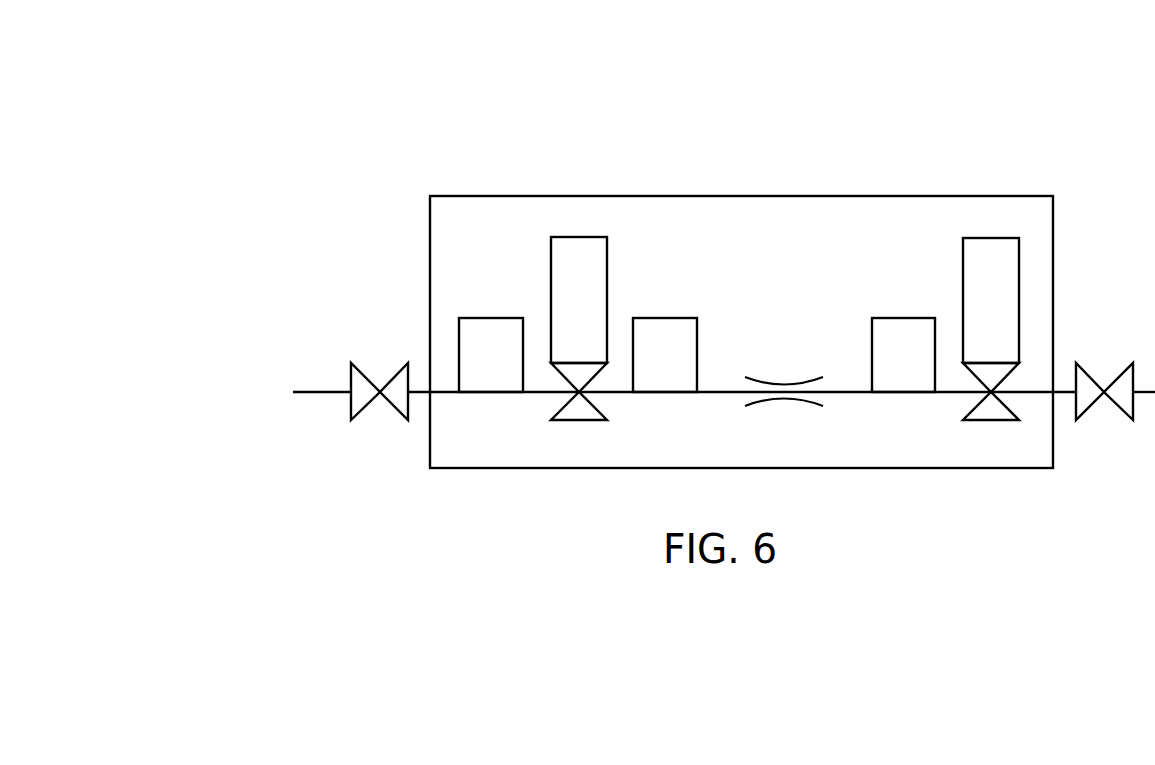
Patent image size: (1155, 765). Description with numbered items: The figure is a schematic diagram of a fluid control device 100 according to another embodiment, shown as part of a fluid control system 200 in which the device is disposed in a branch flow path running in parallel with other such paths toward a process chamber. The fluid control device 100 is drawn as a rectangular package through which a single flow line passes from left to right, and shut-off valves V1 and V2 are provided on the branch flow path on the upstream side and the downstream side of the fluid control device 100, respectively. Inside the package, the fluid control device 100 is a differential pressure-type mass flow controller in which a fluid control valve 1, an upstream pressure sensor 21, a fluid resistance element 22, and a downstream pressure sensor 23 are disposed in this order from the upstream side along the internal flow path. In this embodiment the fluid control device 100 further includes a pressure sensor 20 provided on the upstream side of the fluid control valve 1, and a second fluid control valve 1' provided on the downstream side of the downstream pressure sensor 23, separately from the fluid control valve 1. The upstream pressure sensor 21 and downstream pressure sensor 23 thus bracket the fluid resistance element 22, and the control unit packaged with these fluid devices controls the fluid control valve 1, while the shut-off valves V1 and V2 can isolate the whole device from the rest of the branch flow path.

The fluid control system 200 is at (340, 126).
The fluid control device 100 is at (761, 195).
The fluid control valve 1 is at (579, 281).
The second fluid control valve 1' is at (991, 281).
The pressure sensor 20 is at (490, 316).
The upstream pressure sensor 21 is at (665, 316).
The fluid resistance element 22 is at (785, 384).
The downstream pressure sensor 23 is at (903, 316).
The shut-off valve V1 is at (366, 370).
The shut-off valve V2 is at (1090, 370).